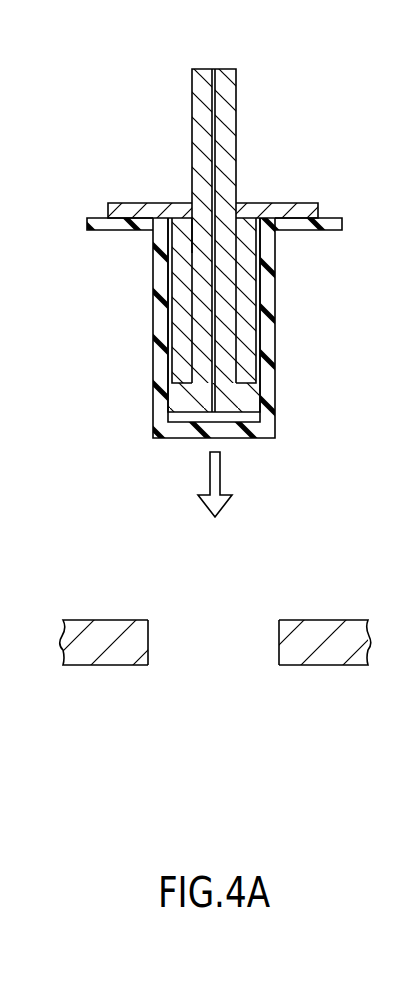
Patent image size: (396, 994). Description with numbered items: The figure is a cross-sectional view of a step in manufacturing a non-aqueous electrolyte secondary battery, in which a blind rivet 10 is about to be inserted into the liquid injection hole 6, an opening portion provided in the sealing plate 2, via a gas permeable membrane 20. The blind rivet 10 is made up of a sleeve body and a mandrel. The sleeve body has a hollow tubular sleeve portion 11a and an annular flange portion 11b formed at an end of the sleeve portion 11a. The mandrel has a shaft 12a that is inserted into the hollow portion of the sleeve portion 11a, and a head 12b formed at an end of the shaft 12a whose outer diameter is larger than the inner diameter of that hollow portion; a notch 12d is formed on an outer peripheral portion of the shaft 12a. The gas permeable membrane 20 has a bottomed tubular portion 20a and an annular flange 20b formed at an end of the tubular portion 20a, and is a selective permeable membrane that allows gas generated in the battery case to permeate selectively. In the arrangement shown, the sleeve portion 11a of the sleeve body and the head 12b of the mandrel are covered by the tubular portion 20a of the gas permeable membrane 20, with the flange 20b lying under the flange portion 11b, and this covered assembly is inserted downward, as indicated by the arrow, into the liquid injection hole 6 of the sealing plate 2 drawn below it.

The blind rivet 10 is at (228, 230).
The shaft 12a is at (237, 127).
The notch 12d is at (200, 253).
The flange portion 11b is at (287, 203).
The sleeve portion 11a is at (254, 305).
The head 12b is at (262, 398).
The gas permeable membrane 20 is at (230, 328).
The tubular portion 20a is at (276, 362).
The flange 20b is at (300, 230).
The sealing plate 2 is at (308, 620).
The liquid injection hole 6 is at (185, 638).